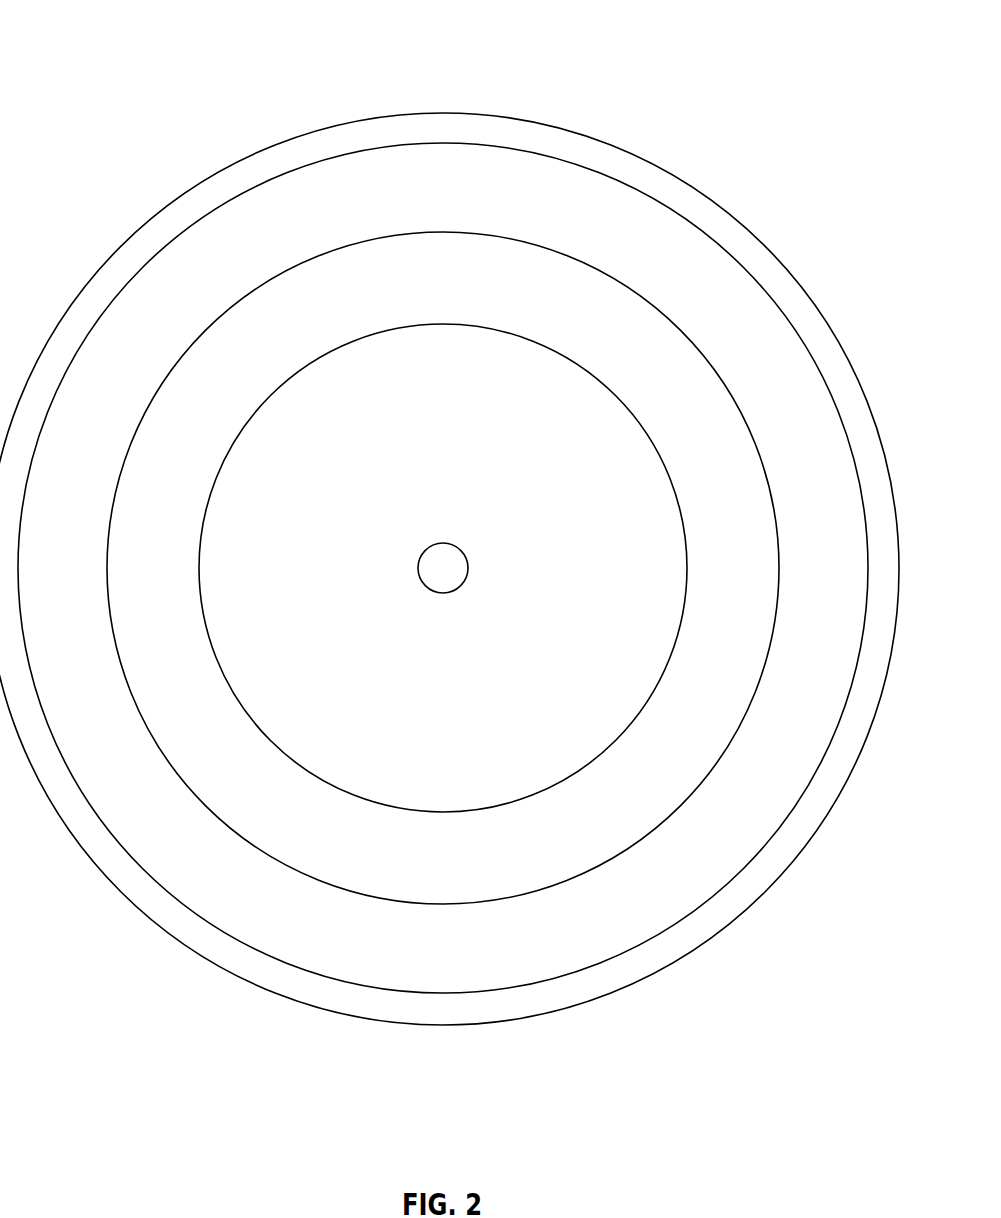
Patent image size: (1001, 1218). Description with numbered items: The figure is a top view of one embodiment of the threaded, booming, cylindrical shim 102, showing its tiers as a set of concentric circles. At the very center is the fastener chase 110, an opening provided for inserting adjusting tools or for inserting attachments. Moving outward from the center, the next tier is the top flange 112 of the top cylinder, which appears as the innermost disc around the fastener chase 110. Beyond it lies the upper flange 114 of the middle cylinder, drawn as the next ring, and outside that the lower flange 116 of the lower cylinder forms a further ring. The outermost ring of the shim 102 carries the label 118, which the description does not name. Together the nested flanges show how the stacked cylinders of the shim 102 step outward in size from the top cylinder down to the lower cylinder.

The shim 102 is at (228, 97).
The fastener chase 110 is at (463, 584).
The top flange 112 is at (463, 684).
The upper flange 114 is at (457, 874).
The lower flange 116 is at (455, 966).
The outer annular zone 118 is at (463, 1068).